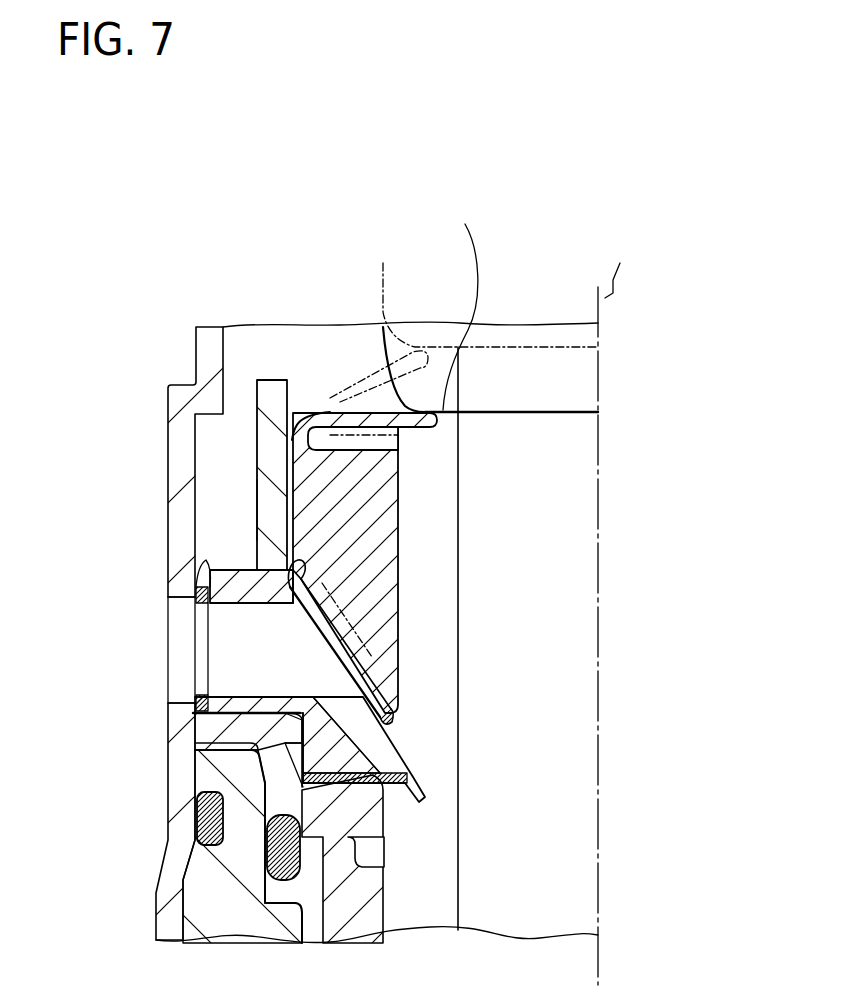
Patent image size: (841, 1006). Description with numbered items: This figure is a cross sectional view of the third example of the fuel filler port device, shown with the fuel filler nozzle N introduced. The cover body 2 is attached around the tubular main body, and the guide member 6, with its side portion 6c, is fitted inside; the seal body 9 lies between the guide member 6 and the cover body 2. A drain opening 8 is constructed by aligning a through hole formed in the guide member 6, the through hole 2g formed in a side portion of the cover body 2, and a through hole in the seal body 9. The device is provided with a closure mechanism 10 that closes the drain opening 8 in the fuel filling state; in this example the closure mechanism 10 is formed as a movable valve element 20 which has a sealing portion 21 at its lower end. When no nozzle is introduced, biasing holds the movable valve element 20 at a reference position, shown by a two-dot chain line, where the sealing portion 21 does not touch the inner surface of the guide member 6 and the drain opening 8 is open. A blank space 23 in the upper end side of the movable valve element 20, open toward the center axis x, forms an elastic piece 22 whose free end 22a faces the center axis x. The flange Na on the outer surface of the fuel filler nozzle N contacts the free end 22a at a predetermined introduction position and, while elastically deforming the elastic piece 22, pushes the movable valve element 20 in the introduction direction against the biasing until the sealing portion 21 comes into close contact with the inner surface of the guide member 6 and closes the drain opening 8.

The cover body 2 is at (195, 370).
The through hole 2g is at (177, 617).
The guide member 6 is at (263, 440).
The side portion 6c is at (263, 507).
The drain opening 8 is at (177, 668).
The seal body 9 is at (198, 556).
The closure mechanism 10 is at (362, 545).
The movable valve element 20 is at (360, 612).
The sealing portion 21 is at (387, 718).
The elastic piece 22 is at (373, 412).
The free end 22a is at (430, 350).
The blank space 23 is at (398, 440).
The center axis x is at (617, 256).
The flange Na is at (550, 381).
The fuel filler nozzle N is at (537, 697).